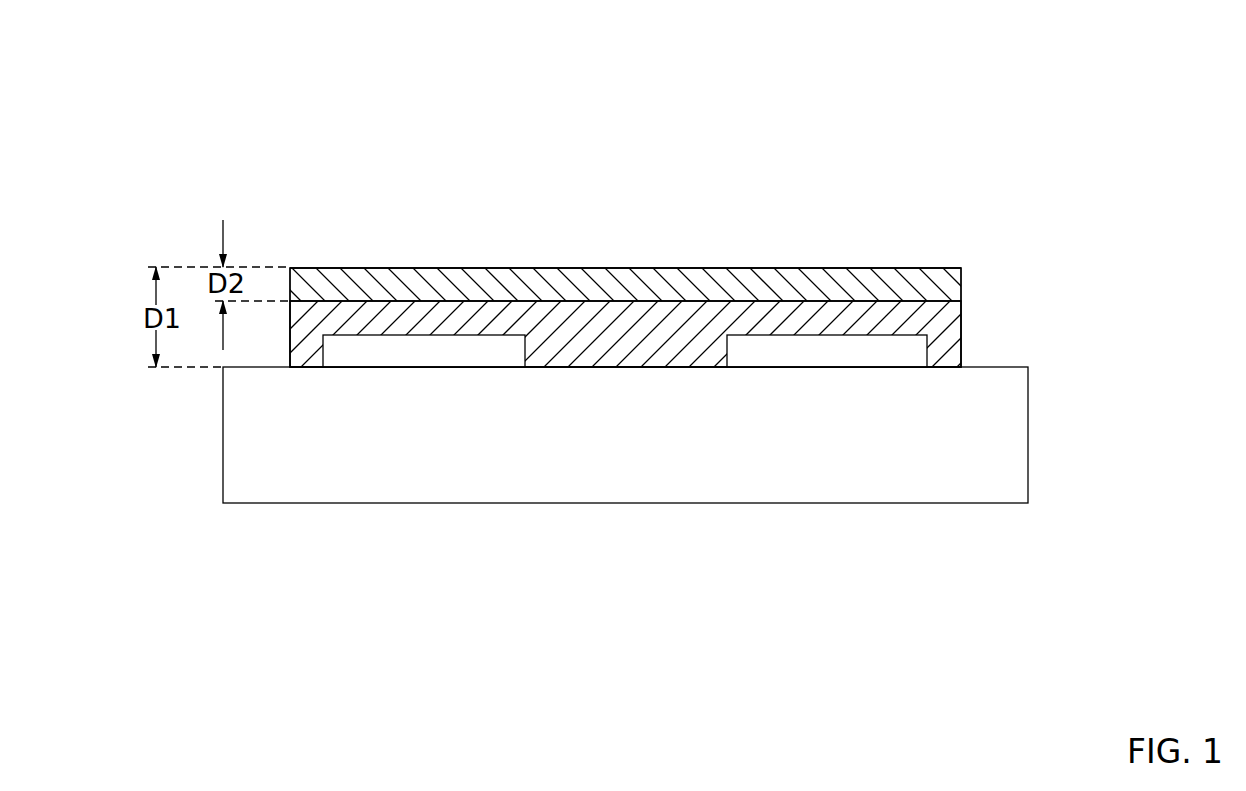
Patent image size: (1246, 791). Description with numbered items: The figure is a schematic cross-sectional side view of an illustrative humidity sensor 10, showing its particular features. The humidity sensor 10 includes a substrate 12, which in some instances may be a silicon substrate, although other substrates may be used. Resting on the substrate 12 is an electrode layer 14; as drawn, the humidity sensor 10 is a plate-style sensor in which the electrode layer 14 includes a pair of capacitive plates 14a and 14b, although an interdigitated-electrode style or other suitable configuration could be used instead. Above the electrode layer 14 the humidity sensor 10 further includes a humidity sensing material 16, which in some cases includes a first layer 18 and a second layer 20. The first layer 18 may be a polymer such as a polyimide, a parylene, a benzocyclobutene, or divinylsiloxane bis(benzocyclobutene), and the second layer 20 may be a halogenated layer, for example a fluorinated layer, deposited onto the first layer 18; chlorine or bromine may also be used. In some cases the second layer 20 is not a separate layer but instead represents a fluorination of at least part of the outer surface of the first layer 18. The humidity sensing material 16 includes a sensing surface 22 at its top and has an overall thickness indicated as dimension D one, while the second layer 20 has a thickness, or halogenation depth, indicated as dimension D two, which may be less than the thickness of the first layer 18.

The humidity sensor 10 is at (212, 100).
The substrate 12 is at (1002, 445).
The electrode layer 14 is at (918, 350).
The capacitive plate 14a is at (425, 361).
The capacitive plate 14b is at (819, 355).
The humidity sensing material 16 is at (276, 225).
The first layer 18 is at (653, 317).
The second layer 20 is at (867, 280).
The sensing surface 22 is at (453, 242).